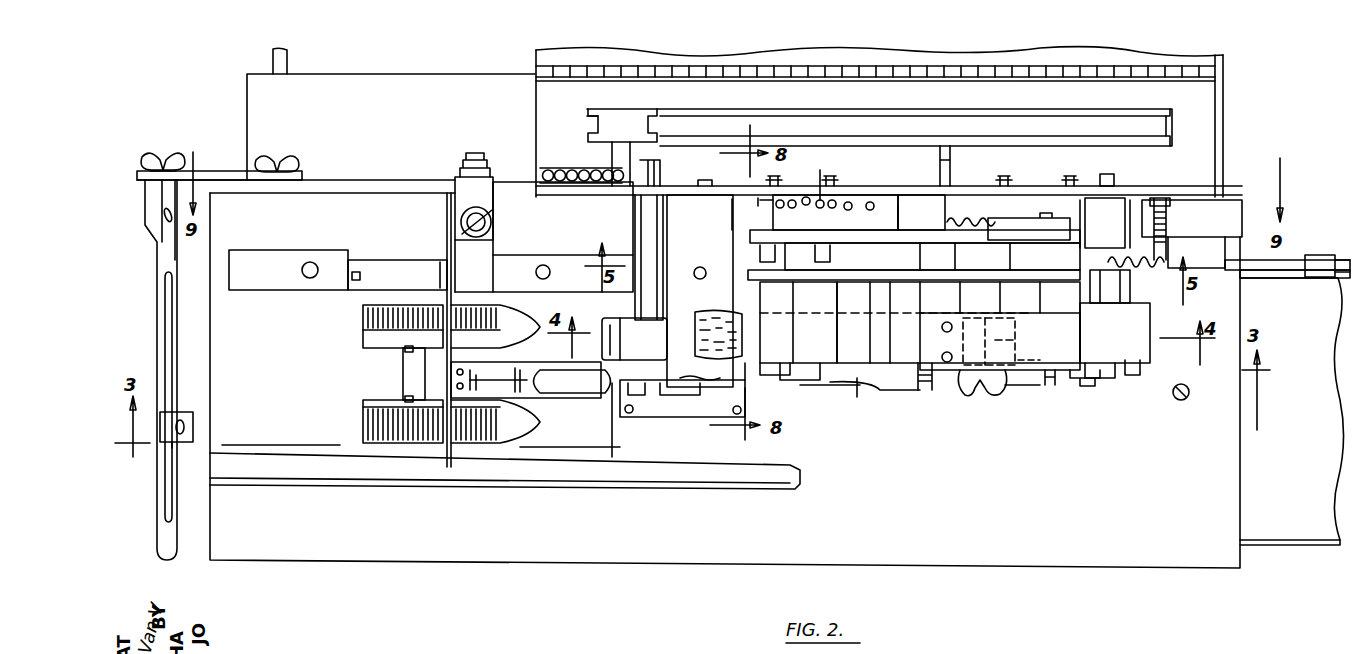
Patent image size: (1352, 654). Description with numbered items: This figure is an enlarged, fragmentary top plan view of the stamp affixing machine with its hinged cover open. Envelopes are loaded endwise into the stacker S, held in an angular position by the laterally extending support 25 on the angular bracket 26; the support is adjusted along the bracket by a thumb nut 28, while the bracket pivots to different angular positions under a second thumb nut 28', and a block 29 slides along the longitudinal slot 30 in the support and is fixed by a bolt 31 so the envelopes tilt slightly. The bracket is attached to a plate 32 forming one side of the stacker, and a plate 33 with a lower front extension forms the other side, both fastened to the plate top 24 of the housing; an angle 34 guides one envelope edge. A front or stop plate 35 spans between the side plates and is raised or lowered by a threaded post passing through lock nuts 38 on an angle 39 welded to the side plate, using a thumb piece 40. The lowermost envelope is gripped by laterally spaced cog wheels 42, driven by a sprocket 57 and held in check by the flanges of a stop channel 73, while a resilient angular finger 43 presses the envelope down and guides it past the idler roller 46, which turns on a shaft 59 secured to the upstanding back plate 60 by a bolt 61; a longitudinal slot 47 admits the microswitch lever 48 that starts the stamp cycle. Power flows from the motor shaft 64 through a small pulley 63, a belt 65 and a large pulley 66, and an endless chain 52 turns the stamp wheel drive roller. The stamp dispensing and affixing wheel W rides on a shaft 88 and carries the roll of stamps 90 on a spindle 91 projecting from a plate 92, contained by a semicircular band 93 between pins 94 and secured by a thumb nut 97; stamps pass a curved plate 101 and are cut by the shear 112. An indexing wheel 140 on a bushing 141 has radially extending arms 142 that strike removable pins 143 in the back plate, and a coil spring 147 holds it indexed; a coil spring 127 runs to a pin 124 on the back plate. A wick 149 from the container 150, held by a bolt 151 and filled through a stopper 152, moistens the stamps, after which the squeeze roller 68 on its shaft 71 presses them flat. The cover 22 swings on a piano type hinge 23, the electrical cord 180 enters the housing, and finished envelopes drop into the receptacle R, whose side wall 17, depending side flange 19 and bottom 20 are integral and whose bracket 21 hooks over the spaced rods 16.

The spaced rods 16 is at (1290, 258).
The side wall 17 is at (1248, 280).
The depending side flange 19 is at (1304, 545).
The bottom 20 is at (1306, 417).
The bracket 21 is at (1320, 256).
The cover 22 is at (1212, 56).
The piano type hinge 23 is at (1215, 77).
The plate top 24 is at (1020, 563).
The laterally extending support 25 is at (162, 252).
The angular bracket 26 is at (212, 171).
The thumb nut 28 is at (163, 149).
The thumb nut 28' is at (277, 149).
The block 29 is at (188, 450).
The longitudinal slot 30 is at (168, 518).
The bolt 31 is at (183, 420).
The plate 32 is at (366, 187).
The plate 33 is at (484, 485).
The angle 34 is at (292, 258).
The front or stop plate 35 is at (453, 275).
The lock nuts 38 is at (470, 210).
The angle 39 is at (490, 210).
The thumb piece 40 is at (490, 232).
The cog wheels 42 is at (366, 335).
The resilient angular finger 43 is at (506, 370).
The idler roller 46 is at (612, 318).
The longitudinal slot 47 is at (545, 392).
The microswitch lever 48 is at (656, 400).
The endless chain 52 is at (548, 168).
The sprocket 57 is at (666, 178).
The shaft 59 is at (645, 220).
The upstanding back plate 60 is at (1168, 192).
The bolt 61 is at (672, 188).
The small pulley 63 is at (598, 116).
The motor shaft 64 is at (620, 157).
The belt 65 is at (694, 122).
The large pulley 66 is at (933, 118).
The squeeze roller 68 is at (1122, 344).
The shaft 71 is at (1118, 287).
The stop channel 73 is at (407, 352).
The shaft 88 is at (946, 186).
The roll of stamps 90 is at (1038, 358).
The spindle 91 is at (999, 341).
The plate 92 is at (1022, 316).
The semicircular band 93 is at (1068, 373).
The pins 94 is at (918, 388).
The thumb nut 97 is at (990, 396).
The curved plate 101 is at (828, 328).
The shear 112 is at (790, 341).
The pin 124 is at (1200, 248).
The coil spring 127 is at (1166, 240).
The indexing wheel 140 is at (851, 212).
The bushing 141 is at (824, 249).
The radially extending arms 142 is at (718, 214).
The removable pins 143 is at (778, 172).
The coil spring 147 is at (985, 212).
The wick 149 is at (722, 320).
The container 150 is at (700, 371).
The bolt 151 is at (710, 180).
The stopper 152 is at (700, 267).
The electrical cord 180 is at (273, 60).
The envelope hopper or stacker S is at (146, 300).
The stamp dispensing and affixing wheel W is at (1086, 232).
The receptacle R is at (1270, 557).